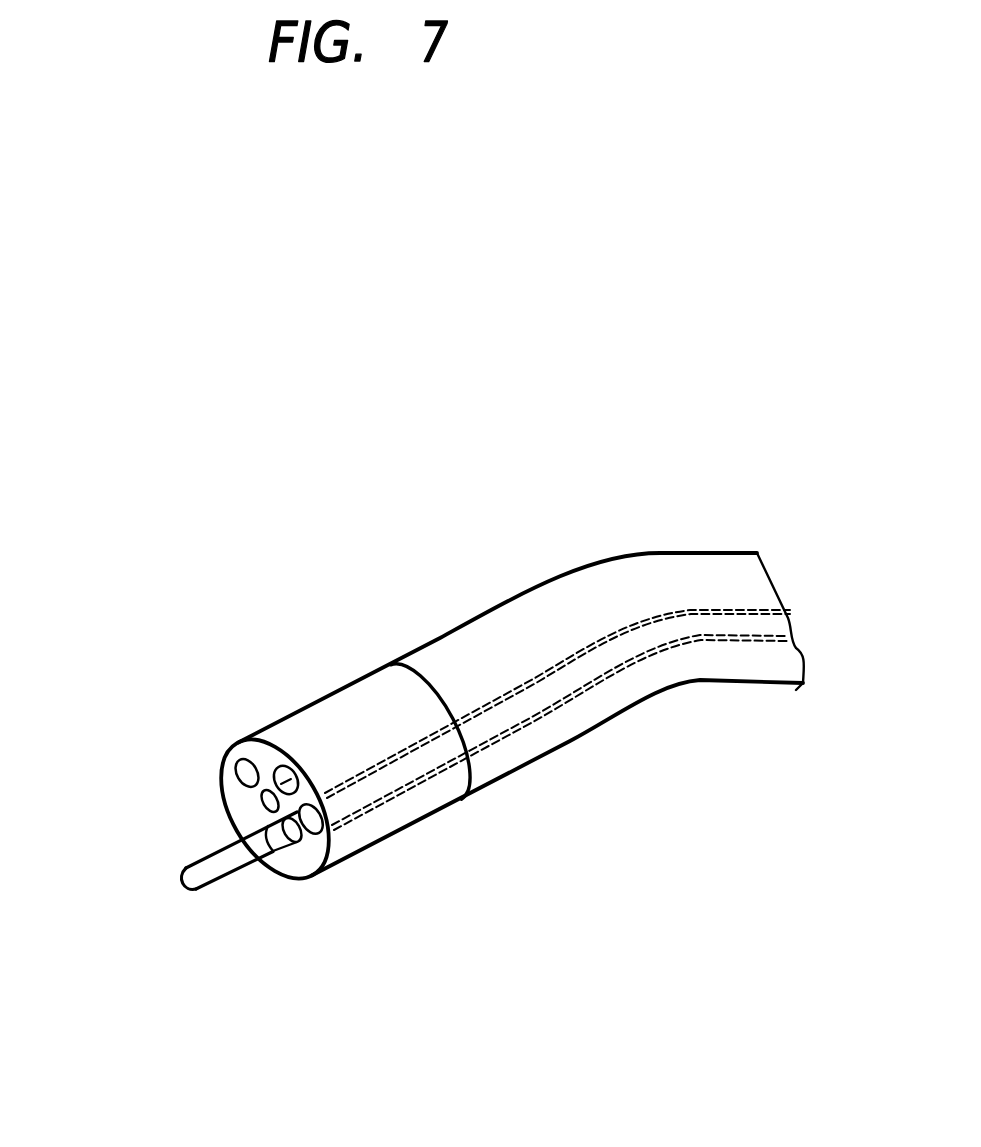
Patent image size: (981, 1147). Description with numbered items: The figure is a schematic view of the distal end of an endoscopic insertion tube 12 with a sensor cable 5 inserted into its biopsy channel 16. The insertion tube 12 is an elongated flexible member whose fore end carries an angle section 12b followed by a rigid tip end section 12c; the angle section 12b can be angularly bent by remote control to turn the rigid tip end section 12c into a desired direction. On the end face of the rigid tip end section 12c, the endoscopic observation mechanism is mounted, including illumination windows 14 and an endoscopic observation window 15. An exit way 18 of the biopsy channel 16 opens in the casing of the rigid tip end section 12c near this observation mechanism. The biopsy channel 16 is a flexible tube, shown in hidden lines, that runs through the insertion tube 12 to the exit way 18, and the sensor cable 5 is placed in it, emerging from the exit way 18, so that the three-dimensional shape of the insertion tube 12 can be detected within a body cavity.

The sensor cable 5 is at (197, 888).
The insertion tube 12 is at (531, 536).
The angle section 12b is at (777, 672).
The rigid tip end section 12c is at (358, 680).
The illumination windows 14 is at (234, 773).
The endoscopic observation window 15 is at (257, 768).
The biopsy channel 16 is at (537, 693).
The exit way 18 is at (297, 846).